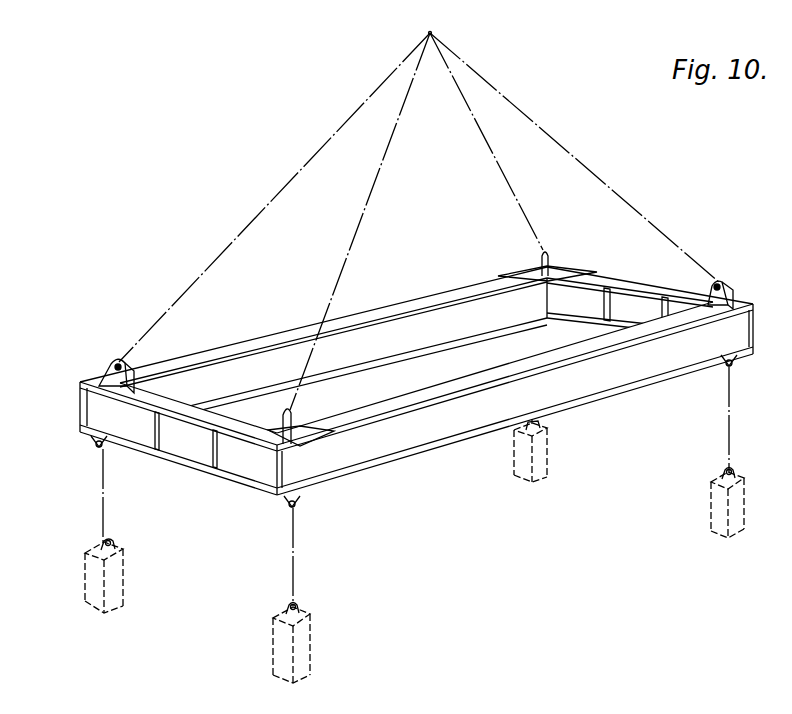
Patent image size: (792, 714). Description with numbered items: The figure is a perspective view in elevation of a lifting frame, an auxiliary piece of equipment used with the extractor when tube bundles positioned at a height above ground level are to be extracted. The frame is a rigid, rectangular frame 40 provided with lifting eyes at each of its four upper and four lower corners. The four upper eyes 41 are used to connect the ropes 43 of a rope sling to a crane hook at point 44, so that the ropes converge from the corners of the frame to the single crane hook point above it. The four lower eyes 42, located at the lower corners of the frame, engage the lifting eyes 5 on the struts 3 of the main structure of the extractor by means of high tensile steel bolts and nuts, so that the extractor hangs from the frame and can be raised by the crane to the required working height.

The rigid rectangular frame 40 is at (392, 447).
The upper lifting eyes 41 is at (115, 358).
The lower lifting eyes 42 is at (97, 449).
The ropes 43 is at (383, 84).
The crane hook point 44 is at (430, 33).
The struts 3 is at (93, 574).
The lifting eyes 5 is at (100, 542).